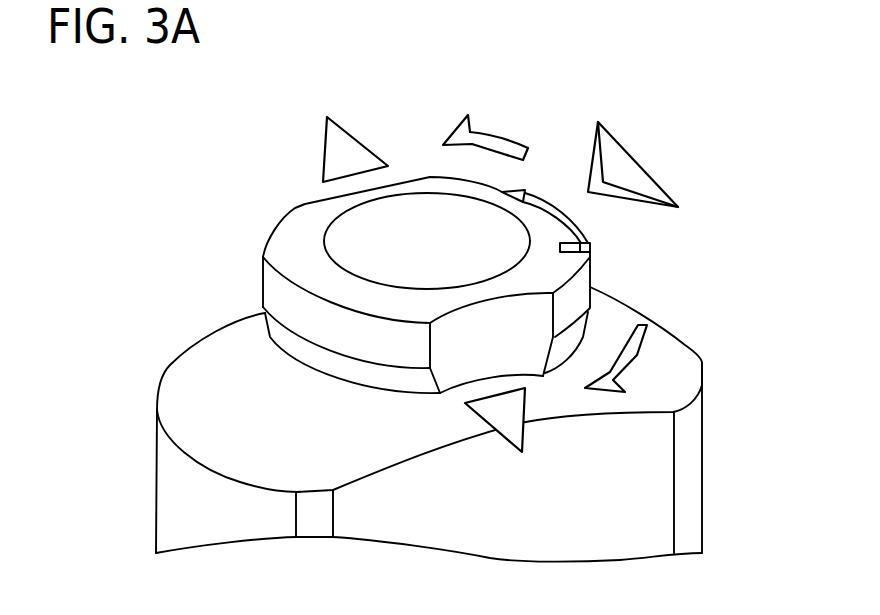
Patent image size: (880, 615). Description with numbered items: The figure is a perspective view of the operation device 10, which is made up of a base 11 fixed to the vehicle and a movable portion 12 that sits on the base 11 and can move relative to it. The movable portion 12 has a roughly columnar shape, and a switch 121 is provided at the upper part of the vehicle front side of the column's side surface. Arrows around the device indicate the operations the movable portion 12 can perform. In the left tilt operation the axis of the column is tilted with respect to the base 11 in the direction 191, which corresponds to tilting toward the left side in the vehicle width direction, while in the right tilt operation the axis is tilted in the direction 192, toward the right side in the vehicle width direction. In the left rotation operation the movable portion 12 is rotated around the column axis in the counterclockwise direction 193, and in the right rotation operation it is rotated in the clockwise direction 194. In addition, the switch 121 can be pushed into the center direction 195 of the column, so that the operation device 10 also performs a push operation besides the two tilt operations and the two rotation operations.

The operation device 10 is at (616, 81).
The base 11 is at (700, 357).
The movable portion 12 is at (275, 228).
The switch 121 is at (550, 195).
The direction 191 is at (362, 145).
The direction 192 is at (520, 433).
The left rotation direction 193 is at (492, 132).
The right rotation direction 194 is at (640, 354).
The center direction 195 is at (641, 167).